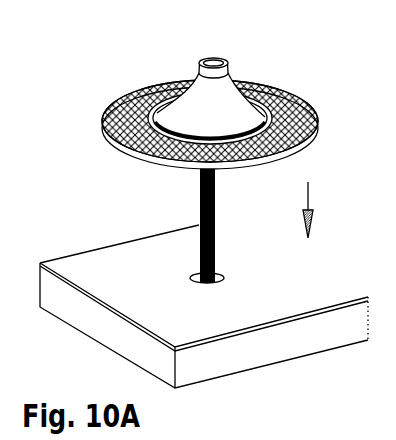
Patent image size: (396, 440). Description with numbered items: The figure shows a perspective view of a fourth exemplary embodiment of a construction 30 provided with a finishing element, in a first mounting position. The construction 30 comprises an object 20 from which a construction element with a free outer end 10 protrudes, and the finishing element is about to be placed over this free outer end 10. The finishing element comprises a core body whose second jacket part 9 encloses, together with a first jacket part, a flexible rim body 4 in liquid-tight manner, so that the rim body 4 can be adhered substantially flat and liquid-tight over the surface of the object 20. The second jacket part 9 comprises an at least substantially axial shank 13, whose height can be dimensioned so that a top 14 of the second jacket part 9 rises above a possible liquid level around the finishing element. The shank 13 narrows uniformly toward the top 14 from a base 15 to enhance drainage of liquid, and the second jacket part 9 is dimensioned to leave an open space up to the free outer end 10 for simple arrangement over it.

The construction 30 is at (73, 38).
The rim body 4 is at (108, 108).
The second jacket part 9 is at (203, 117).
The top 14 is at (227, 65).
The shank 13 is at (240, 82).
The base 15 is at (302, 107).
The free outer end 10 is at (197, 226).
The object 20 is at (110, 268).